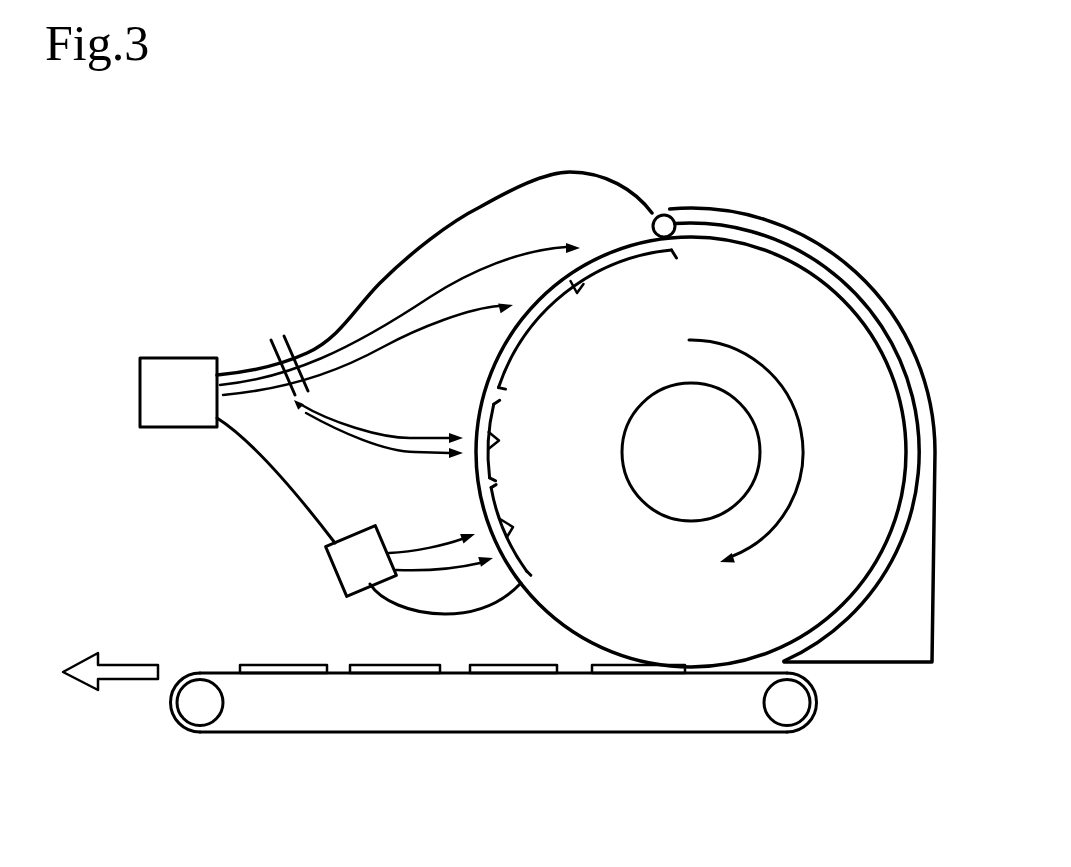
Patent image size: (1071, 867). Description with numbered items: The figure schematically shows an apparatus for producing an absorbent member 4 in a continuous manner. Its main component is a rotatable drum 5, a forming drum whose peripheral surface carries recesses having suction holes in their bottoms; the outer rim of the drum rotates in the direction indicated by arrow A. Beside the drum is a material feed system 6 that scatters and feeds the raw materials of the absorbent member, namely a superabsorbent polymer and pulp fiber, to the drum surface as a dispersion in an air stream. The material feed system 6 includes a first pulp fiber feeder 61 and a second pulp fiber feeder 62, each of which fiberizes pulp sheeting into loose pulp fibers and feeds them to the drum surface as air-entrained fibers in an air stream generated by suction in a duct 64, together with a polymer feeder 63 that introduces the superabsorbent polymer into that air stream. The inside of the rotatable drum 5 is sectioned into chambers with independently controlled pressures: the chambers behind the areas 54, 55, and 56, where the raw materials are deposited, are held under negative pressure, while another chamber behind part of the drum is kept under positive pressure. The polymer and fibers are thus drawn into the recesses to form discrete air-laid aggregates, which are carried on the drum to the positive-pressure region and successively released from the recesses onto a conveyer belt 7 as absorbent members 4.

The absorbent member 4 is at (280, 665).
The rotatable drum 5 is at (793, 258).
The material feed system 6 is at (286, 196).
The conveyer belt 7 is at (428, 748).
The area 54 is at (527, 530).
The area 55 is at (518, 440).
The area 56 is at (588, 319).
The first pulp fiber feeder 61 is at (352, 563).
The second pulp fiber feeder 62 is at (178, 366).
The polymer feeder 63 is at (307, 340).
The duct 64 is at (430, 240).
The arrow A is at (800, 410).